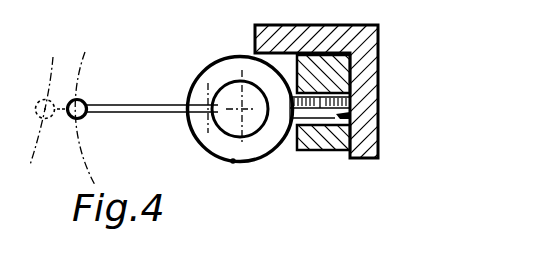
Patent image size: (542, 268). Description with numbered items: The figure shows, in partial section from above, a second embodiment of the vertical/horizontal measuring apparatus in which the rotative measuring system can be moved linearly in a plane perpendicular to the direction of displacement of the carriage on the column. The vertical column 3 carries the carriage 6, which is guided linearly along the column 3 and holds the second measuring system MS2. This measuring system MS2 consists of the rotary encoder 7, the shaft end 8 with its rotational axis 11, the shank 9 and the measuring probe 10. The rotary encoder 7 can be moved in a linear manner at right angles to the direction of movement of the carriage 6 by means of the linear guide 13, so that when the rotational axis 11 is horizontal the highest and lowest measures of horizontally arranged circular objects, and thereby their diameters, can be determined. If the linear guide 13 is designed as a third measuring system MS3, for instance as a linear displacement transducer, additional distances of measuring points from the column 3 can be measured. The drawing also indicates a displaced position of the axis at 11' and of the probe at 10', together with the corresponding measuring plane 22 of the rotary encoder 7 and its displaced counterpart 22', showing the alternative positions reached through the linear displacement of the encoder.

The vertical column 3 is at (372, 137).
The carriage 6 is at (340, 152).
The linear guide 13 is at (293, 125).
The rotary encoder 7 is at (218, 147).
The shaft end 8 is at (252, 127).
The rotational axis 11 is at (243, 72).
The displaced axis position 11' is at (190, 81).
The shank 9 is at (163, 107).
The measuring probe 10 is at (104, 127).
The pin in displaced position 10' is at (31, 144).
The measuring plane 22 is at (108, 113).
The displaced swing path 22' is at (62, 92).
The second measuring system MS2 is at (233, 163).
The third measuring system MS3 is at (352, 115).